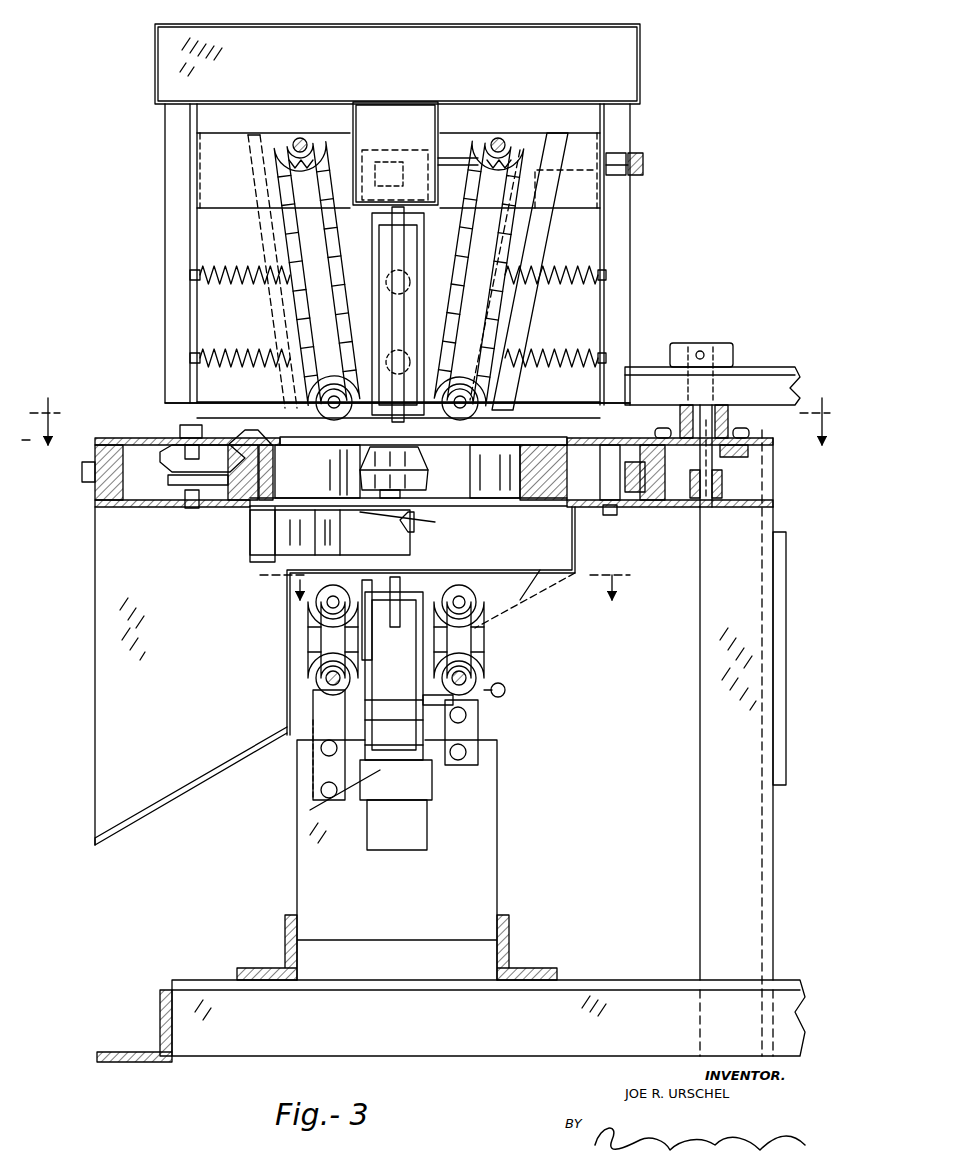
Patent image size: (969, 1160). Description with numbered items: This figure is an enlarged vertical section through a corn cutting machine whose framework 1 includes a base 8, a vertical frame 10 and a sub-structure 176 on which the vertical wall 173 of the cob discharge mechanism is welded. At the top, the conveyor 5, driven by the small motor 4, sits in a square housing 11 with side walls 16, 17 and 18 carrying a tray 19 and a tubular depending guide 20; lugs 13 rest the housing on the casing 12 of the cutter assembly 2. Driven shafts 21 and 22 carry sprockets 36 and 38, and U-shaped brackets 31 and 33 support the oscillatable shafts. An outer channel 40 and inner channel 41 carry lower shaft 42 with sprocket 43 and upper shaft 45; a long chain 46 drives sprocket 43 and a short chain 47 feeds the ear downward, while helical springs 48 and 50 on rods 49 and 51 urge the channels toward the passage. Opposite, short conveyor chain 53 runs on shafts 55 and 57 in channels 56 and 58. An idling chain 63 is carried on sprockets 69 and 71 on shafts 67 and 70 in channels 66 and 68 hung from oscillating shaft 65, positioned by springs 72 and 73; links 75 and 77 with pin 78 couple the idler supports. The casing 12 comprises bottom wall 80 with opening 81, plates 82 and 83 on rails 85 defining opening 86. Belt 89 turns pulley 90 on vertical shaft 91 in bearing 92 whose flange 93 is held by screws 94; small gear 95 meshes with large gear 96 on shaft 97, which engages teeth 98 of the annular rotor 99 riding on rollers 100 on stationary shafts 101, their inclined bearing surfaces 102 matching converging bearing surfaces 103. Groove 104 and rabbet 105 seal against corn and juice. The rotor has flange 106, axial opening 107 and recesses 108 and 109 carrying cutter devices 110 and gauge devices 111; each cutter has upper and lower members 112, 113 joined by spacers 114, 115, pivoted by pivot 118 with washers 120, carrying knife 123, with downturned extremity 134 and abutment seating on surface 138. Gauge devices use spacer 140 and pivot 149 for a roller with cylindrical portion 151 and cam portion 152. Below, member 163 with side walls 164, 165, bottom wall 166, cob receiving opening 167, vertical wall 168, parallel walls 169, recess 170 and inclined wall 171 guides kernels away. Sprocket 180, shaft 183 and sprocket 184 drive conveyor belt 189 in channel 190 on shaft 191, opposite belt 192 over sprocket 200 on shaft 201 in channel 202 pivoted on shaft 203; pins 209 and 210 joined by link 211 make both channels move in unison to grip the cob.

The framework 1 is at (185, 960).
The cutter assembly 2 is at (123, 425).
The small motor 4 is at (445, 580).
The conveyor 5 is at (163, 150).
The base 8 is at (158, 1001).
The vertical frame 10 is at (792, 758).
The housing 11 is at (190, 250).
The casing 12 is at (96, 440).
The lugs 13 is at (250, 418).
The side wall 16 is at (560, 118).
The side wall 17 is at (197, 122).
The side wall 18 is at (620, 104).
The tray 19 is at (628, 68).
The tubular depending guide 20 is at (418, 118).
The driven shaft 21 is at (500, 138).
The driven shaft 22 is at (290, 135).
The U-shaped bracket 31 is at (583, 188).
The U-shaped bracket 33 is at (215, 164).
The sprocket 36 is at (512, 150).
The sprocket 38 is at (300, 166).
The outer channel 40 is at (535, 242).
The inner channel 41 is at (500, 350).
The lower shaft 42 is at (480, 418).
The sprocket 43 is at (485, 392).
The upper shaft 45 is at (455, 254).
The long chain 46 is at (530, 222).
The short chain 47 is at (440, 308).
The helical spring 48 is at (568, 358).
The rod 49 is at (565, 366).
The helical spring 50 is at (560, 272).
The rod 51 is at (562, 282).
The short conveyor chain 53 is at (350, 312).
The shaft 55 is at (340, 266).
The inner short channel 56 is at (296, 348).
The shaft 57 is at (318, 420).
The outer long channel 58 is at (280, 322).
The idling chain 63 is at (395, 340).
The oscillating shaft 65 is at (460, 158).
The outer long channel 66 is at (372, 220).
The short shaft 67 is at (408, 420).
The inner short channel 68 is at (380, 320).
The sprocket 69 is at (395, 380).
The short shaft 70 is at (412, 240).
The sprocket 71 is at (402, 232).
The spring 72 is at (445, 366).
The spring 73 is at (397, 290).
The link 75 is at (643, 160).
The link 77 is at (618, 150).
The pin 78 is at (627, 160).
The bottom wall 80 is at (100, 508).
The central round opening 81 is at (566, 510).
The plate 82 is at (130, 438).
The plate 83 is at (772, 442).
The horizontal rails 85 is at (148, 500).
The opening 86 is at (232, 440).
The belt 89 is at (785, 372).
The pulley 90 is at (740, 365).
The vertical shaft 91 is at (702, 500).
The bearing 92 is at (678, 420).
The radial annular flange 93 is at (750, 452).
The screws 94 is at (654, 432).
The small gear 95 is at (724, 488).
The large gear 96 is at (644, 508).
The shaft 97 is at (612, 514).
The teeth 98 is at (215, 500).
The annular rotor 99 is at (540, 500).
The rollers 100 is at (165, 458).
The stationary shaft 101 is at (190, 425).
The inclined bearing surfaces 102 is at (168, 466).
The converging bearing surfaces 103 is at (268, 462).
The annular groove 104 is at (236, 438).
The rabbet 105 is at (250, 520).
The internal radial annular flange 106 is at (548, 448).
The axial opening 107 is at (488, 490).
The annular recess 108 is at (500, 445).
The annular recess 109 is at (508, 506).
The cutter device 110 is at (250, 548).
The gauge device 111 is at (425, 497).
The upper member 112 is at (376, 522).
The lower member 113 is at (380, 548).
The tubular spacer 114 is at (268, 530).
The tubular spacer 115 is at (306, 542).
The pivot 118 is at (268, 480).
The washers 120 is at (270, 500).
The knife 123 is at (410, 540).
The downturned extremity 134 is at (400, 518).
The internal cylindrical surface 138 is at (548, 510).
The tubular spacer 140 is at (340, 452).
The pivot 149 is at (428, 462).
The cylindrical portion 151 is at (426, 486).
The truncated cam portion 152 is at (428, 472).
The member 163 is at (95, 546).
The side walls 164 is at (105, 575).
The side wall 165 is at (575, 560).
The bottom wall 166 is at (548, 580).
The cob receiving opening 167 is at (440, 572).
The vertical wall 168 is at (286, 705).
The parallel walls 169 is at (296, 714).
The channel-like recess 170 is at (530, 596).
The inclined wall 171 is at (175, 797).
The vertical wall 173 is at (305, 892).
The sub-structure 176 is at (285, 945).
The sprocket 180 is at (471, 670).
The shaft 183 is at (465, 602).
The sprocket 184 is at (471, 592).
The conveyor belt 189 is at (484, 627).
The channel 190 is at (478, 730).
The shaft 191 is at (466, 752).
The conveyor belt 192 is at (308, 628).
The sprocket 200 is at (325, 608).
The shaft 201 is at (330, 600).
The channel 202 is at (313, 775).
The shaft 203 is at (321, 748).
The pin 209 is at (466, 716).
The pin 210 is at (321, 790).
The link 211 is at (355, 790).